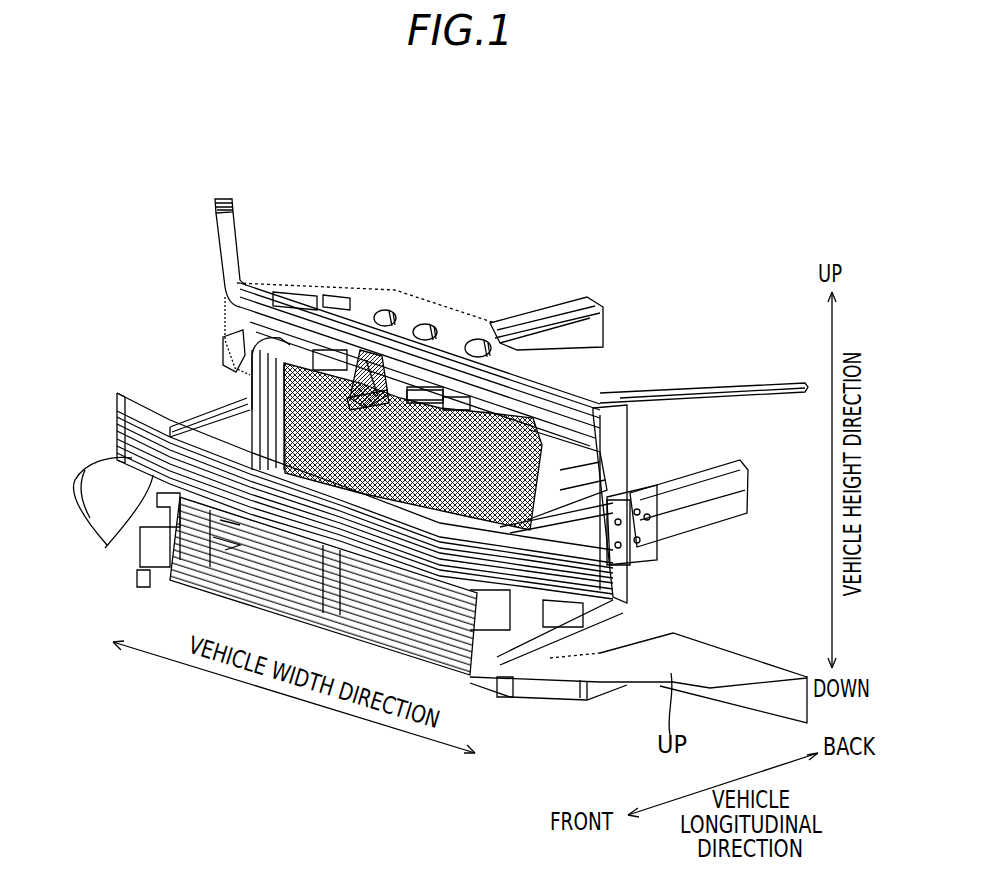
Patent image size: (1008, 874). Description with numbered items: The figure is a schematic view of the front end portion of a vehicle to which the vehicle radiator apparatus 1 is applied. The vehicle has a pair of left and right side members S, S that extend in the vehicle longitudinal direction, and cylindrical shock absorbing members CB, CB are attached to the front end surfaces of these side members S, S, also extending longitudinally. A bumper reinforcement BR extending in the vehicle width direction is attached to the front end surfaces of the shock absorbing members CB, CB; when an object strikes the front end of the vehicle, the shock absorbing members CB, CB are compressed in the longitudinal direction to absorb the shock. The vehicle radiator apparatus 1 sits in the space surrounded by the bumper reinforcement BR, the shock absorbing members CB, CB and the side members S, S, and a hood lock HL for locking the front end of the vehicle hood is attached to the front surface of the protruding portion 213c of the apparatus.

The vehicle radiator apparatus 1 is at (433, 250).
The hood lock HL is at (372, 372).
The protruding portion 213c is at (405, 398).
The side member S is at (578, 300).
The shock absorbing member CB is at (205, 422).
The bumper reinforcement BR is at (110, 545).